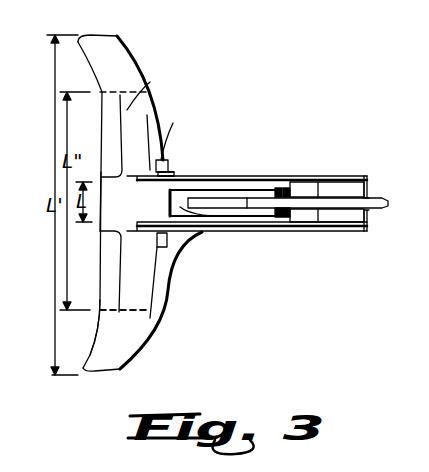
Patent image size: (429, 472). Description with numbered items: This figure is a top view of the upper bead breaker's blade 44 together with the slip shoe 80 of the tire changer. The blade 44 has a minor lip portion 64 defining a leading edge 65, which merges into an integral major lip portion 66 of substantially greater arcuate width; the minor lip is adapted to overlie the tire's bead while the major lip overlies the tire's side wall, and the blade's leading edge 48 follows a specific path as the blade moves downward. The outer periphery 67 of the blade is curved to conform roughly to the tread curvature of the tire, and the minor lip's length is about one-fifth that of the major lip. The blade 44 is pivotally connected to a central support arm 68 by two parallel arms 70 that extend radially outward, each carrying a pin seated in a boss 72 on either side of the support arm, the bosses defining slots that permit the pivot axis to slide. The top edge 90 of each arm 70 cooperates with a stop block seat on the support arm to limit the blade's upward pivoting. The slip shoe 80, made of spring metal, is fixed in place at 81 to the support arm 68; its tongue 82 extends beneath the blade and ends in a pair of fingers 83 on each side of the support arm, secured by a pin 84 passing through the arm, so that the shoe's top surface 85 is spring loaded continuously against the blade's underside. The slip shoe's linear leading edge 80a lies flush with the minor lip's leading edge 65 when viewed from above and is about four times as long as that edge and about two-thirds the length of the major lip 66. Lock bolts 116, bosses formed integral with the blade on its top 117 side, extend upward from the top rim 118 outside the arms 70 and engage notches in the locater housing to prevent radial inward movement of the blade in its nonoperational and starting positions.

The blade 44 is at (194, 137).
The leading edge 48 is at (150, 310).
The minor lip portion 64 is at (119, 235).
The leading edge 65 is at (100, 232).
The major lip portion 66 is at (148, 85).
The outer periphery 67 is at (150, 345).
The support arm 68 is at (388, 206).
The arms 70 is at (370, 178).
The boss 72 is at (345, 190).
The slip shoe 80 is at (204, 235).
The leading edge 80a is at (92, 311).
The fixing location 81 is at (285, 217).
The tongue 82 is at (103, 92).
The fingers 83 is at (258, 187).
The pin 84 is at (286, 188).
The top surface 85 is at (215, 223).
The top edge 90 is at (140, 220).
The lock bolt 116 is at (164, 156).
The top 117 is at (163, 150).
The top rim 118 is at (158, 157).